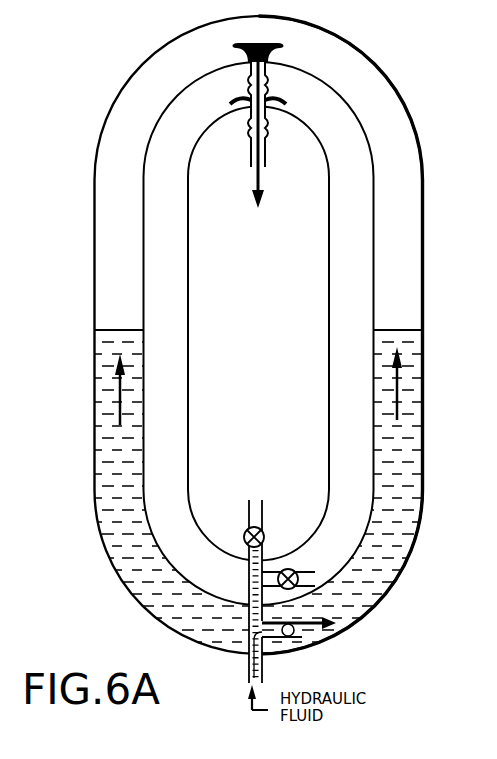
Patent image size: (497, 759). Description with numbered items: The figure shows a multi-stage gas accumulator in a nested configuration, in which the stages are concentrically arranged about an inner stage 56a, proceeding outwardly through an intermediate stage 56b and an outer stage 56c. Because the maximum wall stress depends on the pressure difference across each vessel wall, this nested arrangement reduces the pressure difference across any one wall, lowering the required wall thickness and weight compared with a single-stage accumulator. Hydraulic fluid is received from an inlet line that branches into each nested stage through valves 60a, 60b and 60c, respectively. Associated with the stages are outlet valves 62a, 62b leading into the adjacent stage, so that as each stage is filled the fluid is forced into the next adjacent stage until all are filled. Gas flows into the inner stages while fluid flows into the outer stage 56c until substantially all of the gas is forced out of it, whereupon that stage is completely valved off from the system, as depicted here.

The inner stage 56a is at (277, 321).
The intermediate stage 56b is at (365, 321).
The outer stage 56c is at (411, 321).
The valve 60a is at (262, 531).
The valve 60b is at (298, 572).
The valve 60c is at (300, 621).
The outlet valve 62a is at (267, 128).
The outlet valve 62b is at (277, 73).